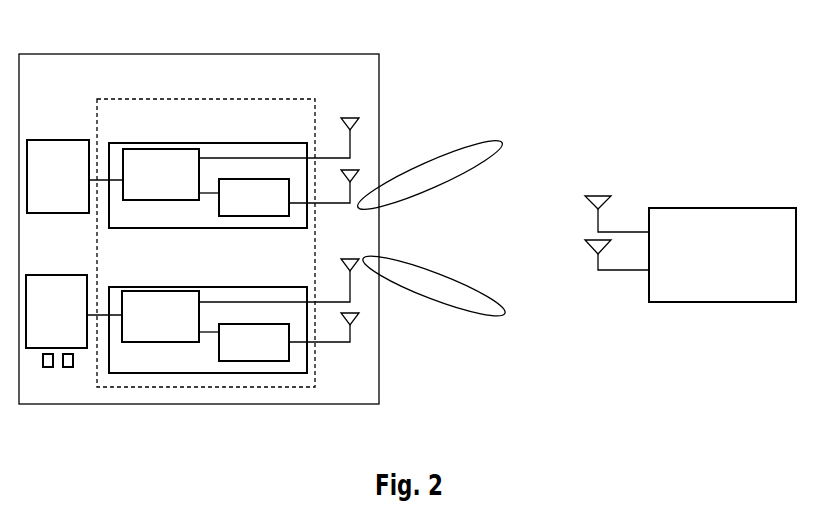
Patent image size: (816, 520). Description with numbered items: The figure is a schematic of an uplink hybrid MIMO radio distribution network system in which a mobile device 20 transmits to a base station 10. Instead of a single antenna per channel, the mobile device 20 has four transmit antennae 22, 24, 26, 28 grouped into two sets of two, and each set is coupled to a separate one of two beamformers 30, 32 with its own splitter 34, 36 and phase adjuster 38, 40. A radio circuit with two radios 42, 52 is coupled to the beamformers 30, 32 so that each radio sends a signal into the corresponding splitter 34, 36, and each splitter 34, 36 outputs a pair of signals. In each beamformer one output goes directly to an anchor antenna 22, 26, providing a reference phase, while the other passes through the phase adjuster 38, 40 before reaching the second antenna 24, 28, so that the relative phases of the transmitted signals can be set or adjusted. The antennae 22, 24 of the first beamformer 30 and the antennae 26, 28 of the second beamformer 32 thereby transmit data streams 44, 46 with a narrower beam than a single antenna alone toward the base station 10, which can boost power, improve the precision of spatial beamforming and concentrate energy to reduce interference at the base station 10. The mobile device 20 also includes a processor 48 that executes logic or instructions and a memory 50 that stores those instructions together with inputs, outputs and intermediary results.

The base station 10 is at (723, 205).
The mobile device 20 is at (80, 45).
The antenna 22 is at (279, 138).
The antenna 24 is at (324, 186).
The antenna 26 is at (279, 280).
The antenna 28 is at (324, 327).
The beamformer 30 is at (208, 173).
The beamformer 32 is at (208, 316).
The splitter 34 is at (180, 200).
The splitter 36 is at (187, 343).
The phase adjuster 38 is at (273, 176).
The phase adjuster 40 is at (283, 323).
The radio 42 is at (68, 139).
The data stream 44 is at (452, 152).
The data stream 46 is at (447, 275).
The processor 48 is at (48, 367).
The memory 50 is at (68, 367).
The radio 52 is at (67, 273).